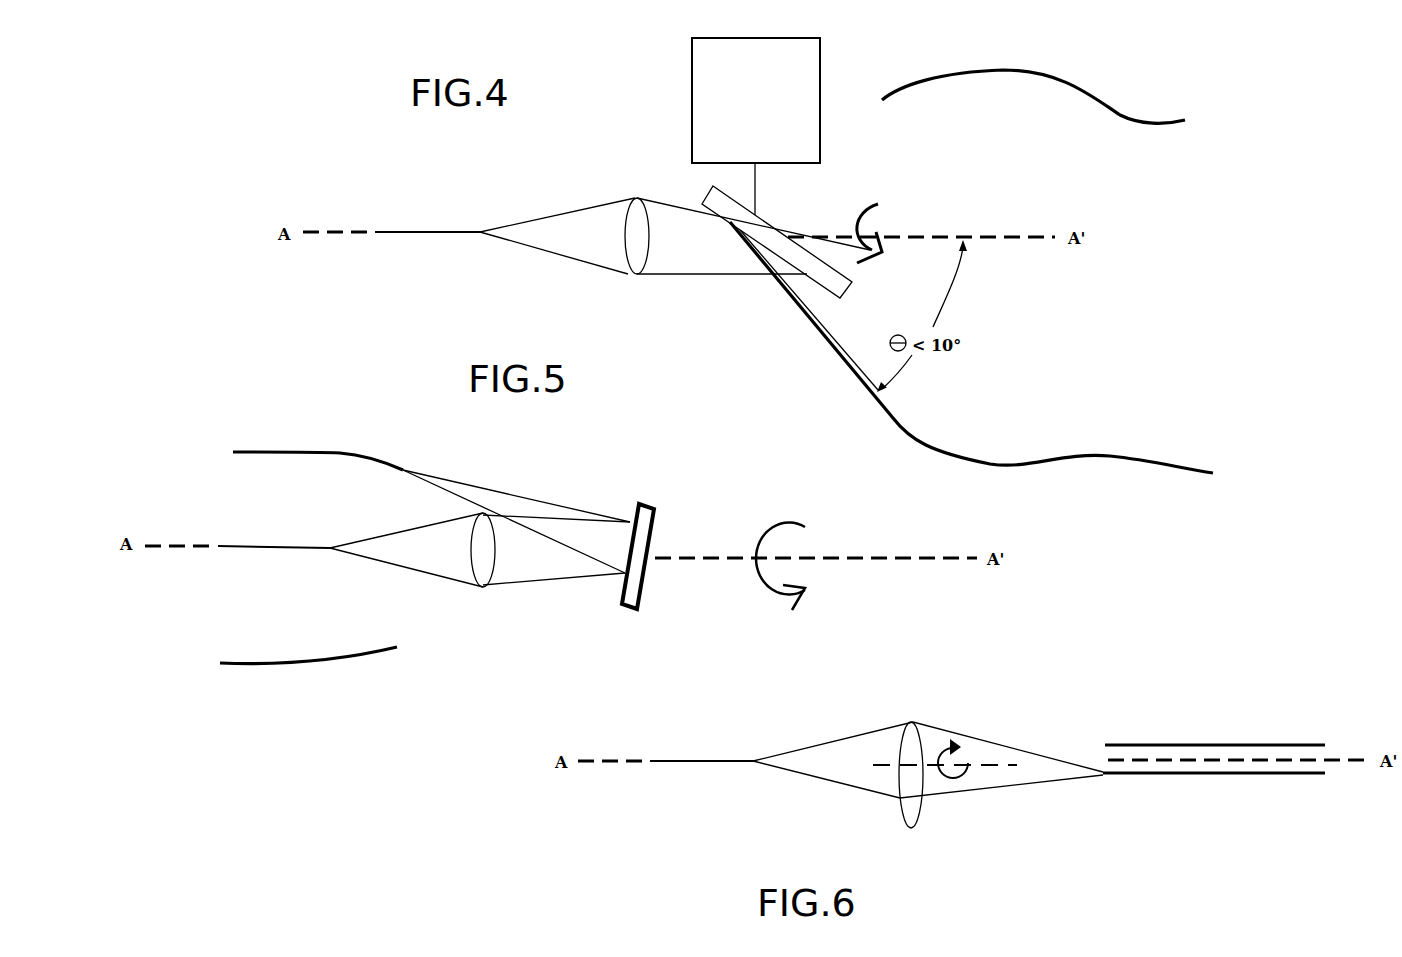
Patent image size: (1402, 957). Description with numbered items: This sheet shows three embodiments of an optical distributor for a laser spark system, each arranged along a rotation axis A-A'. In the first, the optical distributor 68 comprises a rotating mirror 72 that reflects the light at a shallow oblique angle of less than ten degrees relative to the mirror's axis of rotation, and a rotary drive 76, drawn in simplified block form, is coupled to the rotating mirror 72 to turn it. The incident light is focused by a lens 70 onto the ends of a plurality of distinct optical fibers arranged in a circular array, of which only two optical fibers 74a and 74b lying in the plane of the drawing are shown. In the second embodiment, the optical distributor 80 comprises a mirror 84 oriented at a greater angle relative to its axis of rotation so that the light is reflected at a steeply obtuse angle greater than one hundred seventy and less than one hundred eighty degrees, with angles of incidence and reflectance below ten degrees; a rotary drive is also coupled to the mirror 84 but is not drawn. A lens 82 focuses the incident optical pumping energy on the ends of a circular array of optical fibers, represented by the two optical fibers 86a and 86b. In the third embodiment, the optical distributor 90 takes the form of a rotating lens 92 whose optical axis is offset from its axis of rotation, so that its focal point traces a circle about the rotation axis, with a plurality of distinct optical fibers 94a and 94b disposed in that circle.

In FIG. 4, the optical distributor 68 is at (660, 178).
In FIG. 4, the lens 70 is at (633, 235).
In FIG. 4, the rotating mirror 72 is at (842, 288).
In FIG. 4, the optical fiber 74a is at (1100, 456).
In FIG. 4, the optical fiber 74b is at (1007, 72).
In FIG. 4, the rotary drive 76 is at (808, 121).
In FIG. 5, the optical distributor 80 is at (658, 488).
In FIG. 5, the lens 82 is at (485, 567).
In FIG. 5, the mirror 84 is at (637, 600).
In FIG. 5, the optical fiber 86a is at (338, 452).
In FIG. 5, the optical fiber 86b is at (350, 660).
In FIG. 6, the optical distributor 90 is at (985, 828).
In FIG. 6, the rotating lens 92 is at (910, 750).
In FIG. 6, the optical fiber 94a is at (1191, 745).
In FIG. 6, the optical fiber 94b is at (1192, 773).